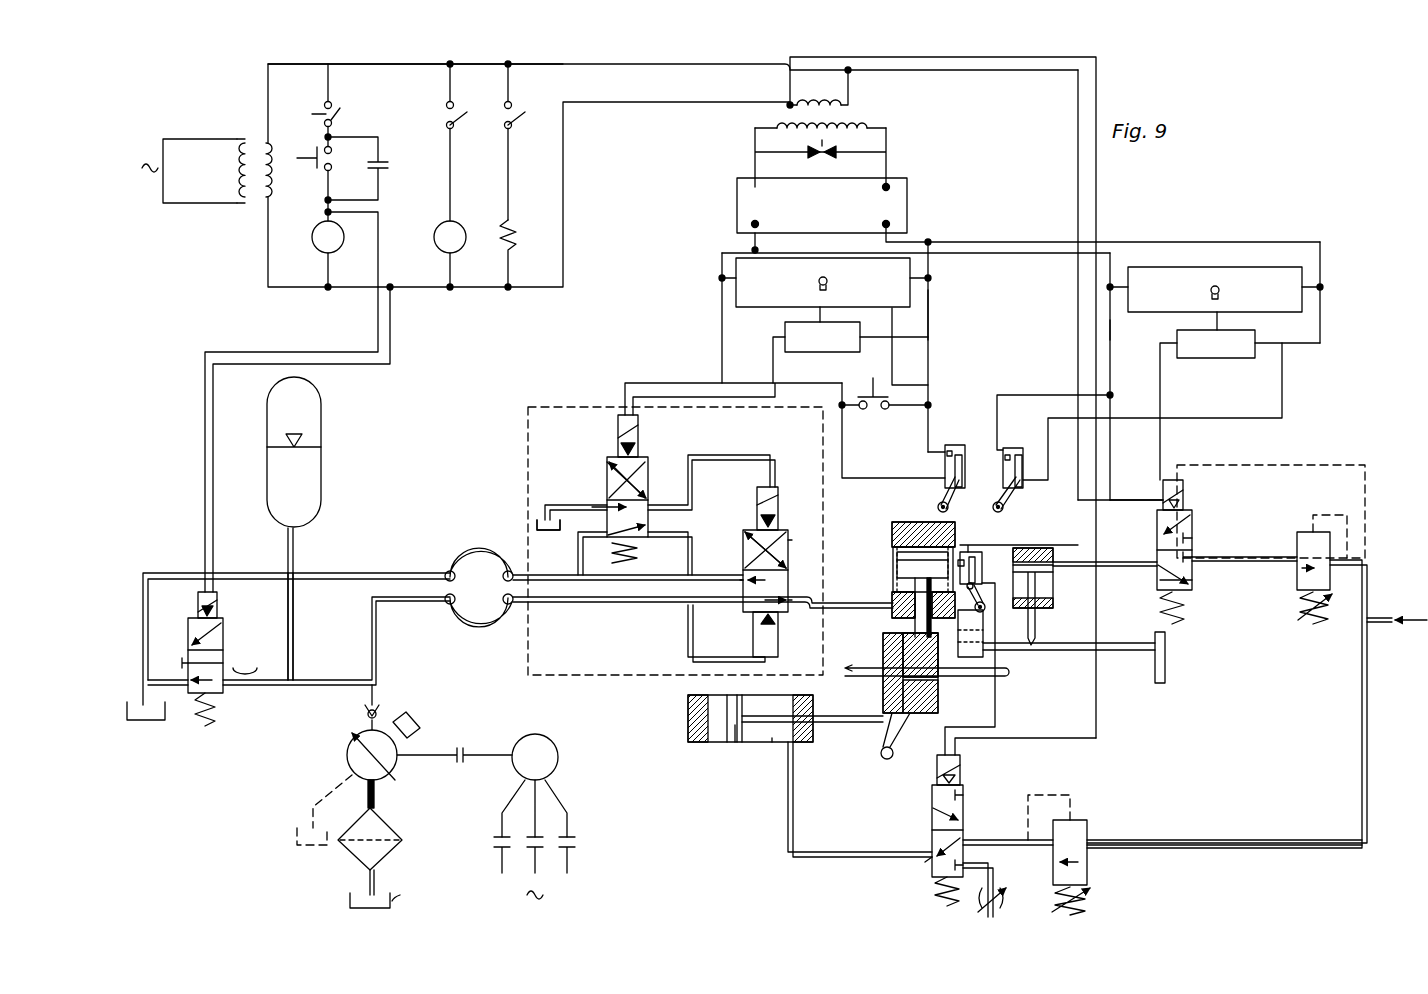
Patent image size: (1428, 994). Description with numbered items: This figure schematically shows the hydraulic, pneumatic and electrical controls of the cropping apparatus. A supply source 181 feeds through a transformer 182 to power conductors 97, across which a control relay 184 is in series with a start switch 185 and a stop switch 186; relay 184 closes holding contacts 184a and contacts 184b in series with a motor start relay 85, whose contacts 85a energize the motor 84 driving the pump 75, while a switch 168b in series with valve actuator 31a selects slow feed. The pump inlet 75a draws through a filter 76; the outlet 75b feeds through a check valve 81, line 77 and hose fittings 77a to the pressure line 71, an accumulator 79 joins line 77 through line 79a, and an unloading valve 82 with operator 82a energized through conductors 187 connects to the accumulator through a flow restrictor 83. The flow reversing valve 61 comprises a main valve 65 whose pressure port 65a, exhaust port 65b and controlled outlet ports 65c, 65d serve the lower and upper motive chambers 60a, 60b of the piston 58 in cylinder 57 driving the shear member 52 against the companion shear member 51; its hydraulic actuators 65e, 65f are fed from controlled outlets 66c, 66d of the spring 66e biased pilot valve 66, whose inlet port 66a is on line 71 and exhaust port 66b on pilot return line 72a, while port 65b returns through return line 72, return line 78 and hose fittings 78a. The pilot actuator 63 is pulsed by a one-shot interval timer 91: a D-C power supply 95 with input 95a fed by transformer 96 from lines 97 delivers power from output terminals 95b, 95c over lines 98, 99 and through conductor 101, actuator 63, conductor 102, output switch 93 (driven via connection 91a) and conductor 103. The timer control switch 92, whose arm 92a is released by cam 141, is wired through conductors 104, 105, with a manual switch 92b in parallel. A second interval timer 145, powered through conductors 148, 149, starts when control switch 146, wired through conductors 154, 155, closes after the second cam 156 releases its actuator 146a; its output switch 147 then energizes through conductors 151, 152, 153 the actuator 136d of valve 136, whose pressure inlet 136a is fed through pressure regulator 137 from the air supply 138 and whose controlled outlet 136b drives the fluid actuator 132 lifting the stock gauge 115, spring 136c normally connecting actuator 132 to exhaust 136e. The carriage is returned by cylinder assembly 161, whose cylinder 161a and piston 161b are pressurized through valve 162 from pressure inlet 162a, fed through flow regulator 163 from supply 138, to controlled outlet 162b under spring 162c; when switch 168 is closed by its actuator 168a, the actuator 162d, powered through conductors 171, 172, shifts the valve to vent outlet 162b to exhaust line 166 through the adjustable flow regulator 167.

The supply source 181 is at (152, 160).
The transformer 182 is at (262, 120).
The stop switch 186 is at (324, 102).
The start switch 185 is at (333, 168).
The control relay 184 is at (313, 240).
The relay contacts 184a is at (381, 154).
The relay contacts 184b is at (500, 84).
The motor start relay 85 is at (458, 224).
The normally open switch 168b is at (548, 92).
The electro-responsive valve actuator 31a is at (516, 238).
The power conductors 97 is at (604, 64).
The conductor 171 is at (1096, 80).
The conductor 172 is at (1078, 114).
The transformer 96 is at (850, 112).
The D-C power supply 95 is at (907, 196).
The input 95a is at (886, 187).
The output terminal 95b is at (737, 224).
The output terminal 95c is at (886, 224).
The line 98 is at (722, 264).
The one-shot interval timer 91 is at (736, 292).
The line 99 is at (928, 275).
The conductor 103 is at (928, 318).
The timer-to-output-switch connection 91a is at (820, 318).
The output switch 93 is at (820, 352).
The conductor 102 is at (780, 346).
The conductor 105 is at (892, 361).
The manually operable switch 92b is at (894, 400).
The conductor 104 is at (842, 440).
The conductor 148 is at (1112, 254).
The conductor 149 is at (1240, 224).
The second interval timer 145 is at (1266, 270).
The conductor 151 is at (1110, 328).
The output switch 147 is at (1208, 358).
The conductor 153 is at (1300, 344).
The conductor 152 is at (1160, 413).
The conductor 154 is at (1046, 395).
The conductor 155 is at (1055, 449).
The control switch 146 is at (1006, 448).
The switch actuator 146a is at (999, 502).
The second cam 156 is at (1008, 509).
The timer control switch 92 is at (944, 446).
The switch actuating arm 92a is at (940, 507).
The cam 141 is at (954, 506).
The upper motive chamber 60b is at (892, 538).
The piston 58 is at (897, 564).
The cylinder 57 is at (897, 582).
The lower motive chamber 60a is at (915, 612).
The housing 51 is at (883, 694).
The shear member 52 is at (938, 693).
The switch 168 is at (980, 554).
The switch actuator 168a is at (974, 610).
The fluid actuator 132 is at (1050, 592).
The stock gauge 115 is at (1165, 660).
The electro-responsive actuator 136d is at (1183, 497).
The valve 136 is at (1194, 522).
The controlled outlet 136b is at (1157, 584).
The pressure inlet 136a is at (1195, 561).
The exhaust 136e is at (1192, 590).
The spring 136c is at (1184, 612).
The pressure regulator 137 is at (1296, 546).
The air supply source 138 is at (1392, 628).
The electro-responsive actuator 162d is at (960, 770).
The valve 162 is at (932, 828).
The pressure inlet 162a is at (963, 840).
The controlled outlet 162b is at (928, 860).
The spring 162c is at (948, 904).
The flow regulator 163 is at (1086, 826).
The exhaust line 166 is at (985, 863).
The adjustable flow regulator 167 is at (998, 904).
The cylinder assembly 161 is at (733, 694).
The piston 161b is at (735, 742).
The cylinder 161a is at (772, 744).
The flow reversing valve 61 is at (566, 404).
The conductor 101 is at (634, 379).
The electro-responsive actuator 63 is at (640, 436).
The pilot valve 66 is at (606, 464).
The exhaust port 66b is at (608, 506).
The pilot return line 72a is at (542, 518).
The controlled outlet port 66d is at (650, 502).
The inlet port 66a is at (602, 540).
The controlled outlet port 66c is at (652, 542).
The spring 66e is at (626, 566).
The return line 72 is at (560, 562).
The pressure supply line 71 is at (552, 604).
The hydraulic actuator 65f is at (774, 496).
The main flow reversing valve 65 is at (743, 540).
The controlled outlet port 65d is at (792, 540).
The exhaust port 65b is at (742, 580).
The controlled outlet port 65c is at (790, 602).
The pressure port 65a is at (744, 606).
The hydraulic actuator 65e is at (771, 648).
The conductors 187 is at (387, 340).
The accumulator 79 is at (322, 482).
The return line 78 is at (328, 573).
The hose fittings 78a is at (487, 547).
The hose fittings 77a is at (470, 630).
The line 77 is at (376, 646).
The line 79a is at (293, 638).
The electro-responsive operator 82a is at (226, 606).
The unloading valve 82 is at (223, 640).
The flow restrictor 83 is at (248, 690).
The check valve 81 is at (368, 712).
The pump outlet 75b is at (378, 716).
The pump 75 is at (347, 755).
The pump inlet 75a is at (375, 784).
The filter 76 is at (385, 846).
The motor 84 is at (560, 727).
The relay contacts 85a is at (567, 837).